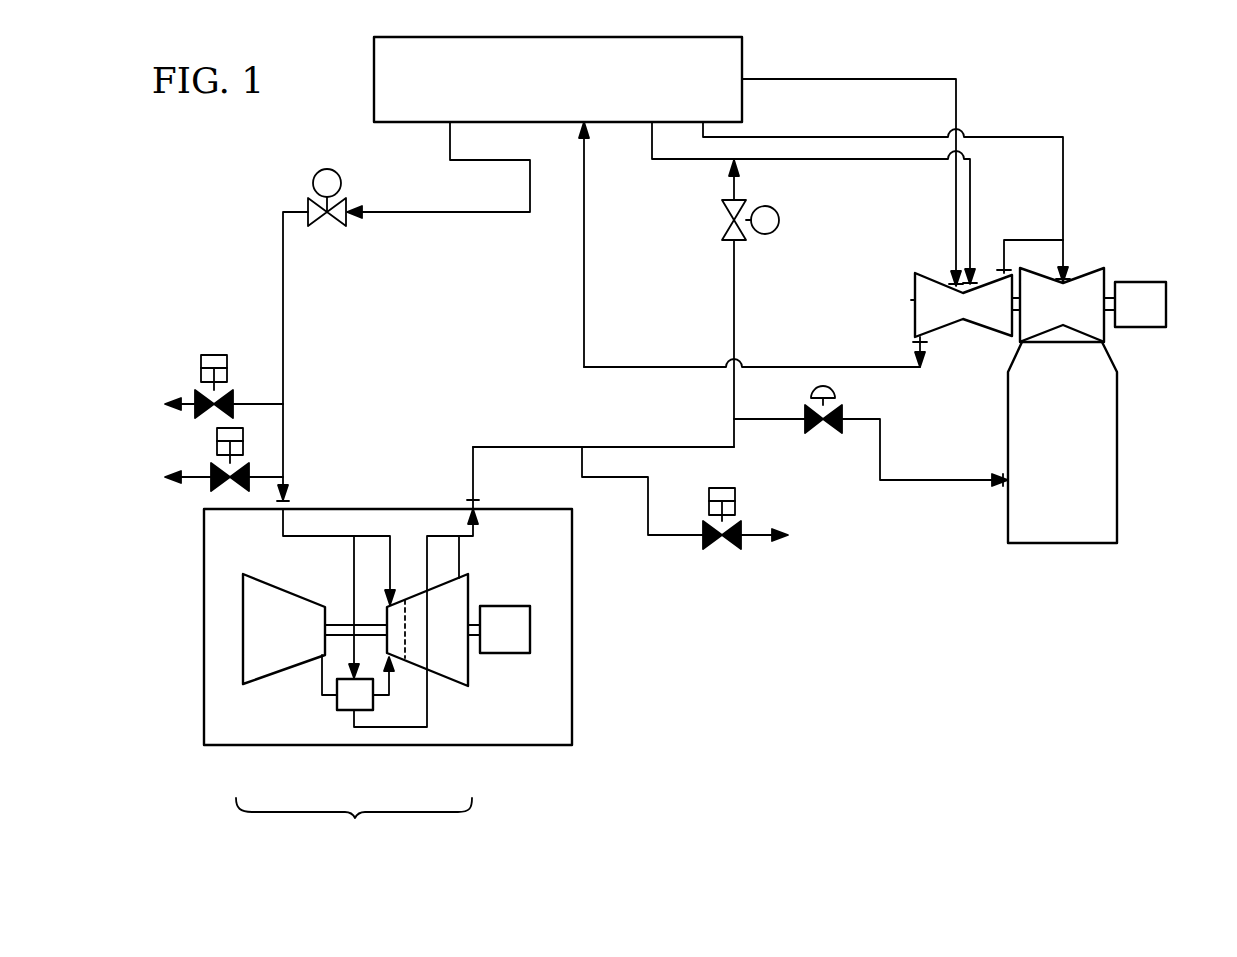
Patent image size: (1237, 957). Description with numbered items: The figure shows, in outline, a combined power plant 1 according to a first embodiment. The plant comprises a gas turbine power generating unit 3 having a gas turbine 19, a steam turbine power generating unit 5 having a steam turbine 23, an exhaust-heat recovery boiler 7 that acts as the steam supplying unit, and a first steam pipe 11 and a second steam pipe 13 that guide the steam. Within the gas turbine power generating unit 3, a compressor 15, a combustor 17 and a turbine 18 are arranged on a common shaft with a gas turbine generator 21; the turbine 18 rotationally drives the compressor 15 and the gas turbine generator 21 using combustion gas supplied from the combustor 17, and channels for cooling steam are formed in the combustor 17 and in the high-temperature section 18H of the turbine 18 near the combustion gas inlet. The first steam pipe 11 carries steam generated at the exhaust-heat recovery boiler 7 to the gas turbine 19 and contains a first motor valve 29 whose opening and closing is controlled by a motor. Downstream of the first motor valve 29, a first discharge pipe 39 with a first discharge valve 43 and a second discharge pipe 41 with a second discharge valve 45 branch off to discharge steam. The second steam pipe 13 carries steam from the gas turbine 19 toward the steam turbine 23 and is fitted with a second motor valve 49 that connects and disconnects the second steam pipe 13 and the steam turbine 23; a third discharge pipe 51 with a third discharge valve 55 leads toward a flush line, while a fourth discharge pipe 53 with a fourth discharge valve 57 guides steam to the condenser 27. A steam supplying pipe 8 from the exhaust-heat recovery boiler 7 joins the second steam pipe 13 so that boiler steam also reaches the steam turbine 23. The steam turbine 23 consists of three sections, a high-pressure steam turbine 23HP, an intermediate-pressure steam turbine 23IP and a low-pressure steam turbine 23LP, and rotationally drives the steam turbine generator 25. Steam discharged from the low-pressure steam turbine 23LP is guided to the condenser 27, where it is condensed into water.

The combined power plant 1 is at (1125, 76).
The gas turbine power generating unit 3 is at (630, 713).
The steam turbine power generating unit 5 is at (1138, 186).
The exhaust-heat recovery boiler 7 is at (374, 72).
The steam supplying pipe 8 is at (672, 162).
The first steam pipe 11 is at (437, 214).
The second steam pipe 13 is at (518, 445).
The compressor 15 is at (258, 686).
The combustor 17 is at (346, 712).
The turbine 18 is at (448, 688).
The high-temperature section 18H is at (398, 602).
The gas turbine 19 is at (354, 827).
The gas turbine generator 21 is at (532, 630).
The steam turbine 23 is at (1081, 228).
The high-pressure steam turbine 23HP is at (913, 300).
The intermediate-pressure steam turbine 23IP is at (985, 282).
The low-pressure steam turbine 23LP is at (1025, 330).
The steam turbine generator 25 is at (1152, 282).
The condenser 27 is at (1066, 546).
The first motor valve 29 is at (313, 184).
The first discharge pipe 39 is at (250, 400).
The second discharge pipe 41 is at (263, 475).
The first discharge valve 43 is at (209, 352).
The second discharge valve 45 is at (217, 436).
The second motor valve 49 is at (780, 220).
The third discharge pipe 51 is at (672, 538).
The fourth discharge pipe 53 is at (921, 484).
The third discharge valve 55 is at (731, 550).
The fourth discharge valve 57 is at (830, 435).